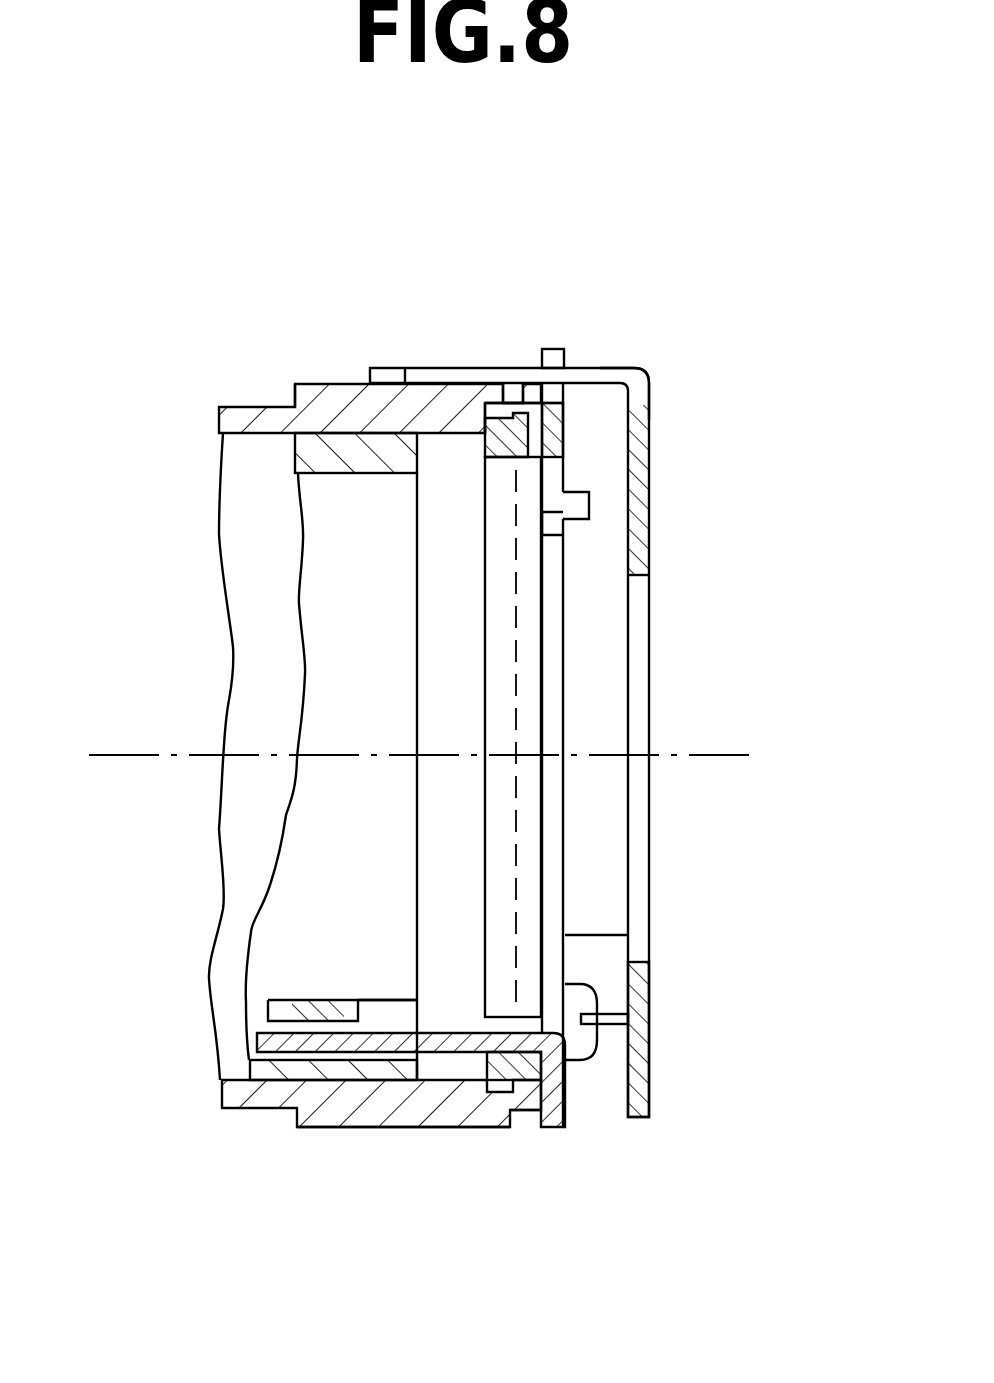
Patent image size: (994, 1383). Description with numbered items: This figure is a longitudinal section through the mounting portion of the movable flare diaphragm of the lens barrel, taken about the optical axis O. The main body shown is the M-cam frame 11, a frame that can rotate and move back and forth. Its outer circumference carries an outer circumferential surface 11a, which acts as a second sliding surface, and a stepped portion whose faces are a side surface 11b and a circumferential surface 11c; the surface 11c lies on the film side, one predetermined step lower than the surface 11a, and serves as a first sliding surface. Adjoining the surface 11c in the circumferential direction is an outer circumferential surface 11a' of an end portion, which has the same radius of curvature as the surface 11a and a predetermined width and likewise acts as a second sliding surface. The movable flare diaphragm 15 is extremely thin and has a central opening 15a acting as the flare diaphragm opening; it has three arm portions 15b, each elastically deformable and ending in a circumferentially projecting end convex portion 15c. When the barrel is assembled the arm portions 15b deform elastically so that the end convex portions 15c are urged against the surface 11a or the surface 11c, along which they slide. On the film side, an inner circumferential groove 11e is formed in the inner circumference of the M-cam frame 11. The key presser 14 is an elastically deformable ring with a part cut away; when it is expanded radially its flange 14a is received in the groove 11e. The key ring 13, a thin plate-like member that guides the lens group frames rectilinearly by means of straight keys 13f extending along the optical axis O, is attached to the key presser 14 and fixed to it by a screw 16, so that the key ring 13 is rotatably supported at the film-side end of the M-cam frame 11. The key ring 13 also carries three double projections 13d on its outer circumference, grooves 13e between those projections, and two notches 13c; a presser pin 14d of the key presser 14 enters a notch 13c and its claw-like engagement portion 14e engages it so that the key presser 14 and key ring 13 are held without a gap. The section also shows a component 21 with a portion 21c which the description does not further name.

The M-cam frame 11 is at (233, 407).
The outer circumferential surface 11a is at (268, 320).
The outer circumferential surface of end portion 11a' is at (550, 277).
The side surface of stepped portion 11b is at (488, 385).
The circumferential surface of stepped portion 11c is at (518, 403).
The inner circumferential groove 11e is at (455, 1127).
The key ring 13 is at (555, 862).
The notch 13c is at (542, 512).
The double projections 13d is at (567, 355).
The grooves 13e is at (563, 403).
The straight keys 13f is at (322, 1022).
The key presser 14 is at (530, 806).
The flange 14a is at (411, 1156).
The presser pin 14d is at (590, 495).
The claw-like portion 14e is at (589, 519).
The movable flare diaphragm 15 is at (652, 850).
The opening 15a is at (652, 955).
The arm portion 15b is at (644, 380).
The end convex portion 15c is at (388, 369).
The screw 16 is at (593, 1063).
The lens 21 is at (300, 473).
The lens flange 21c is at (380, 1110).
The optical axis O is at (122, 754).